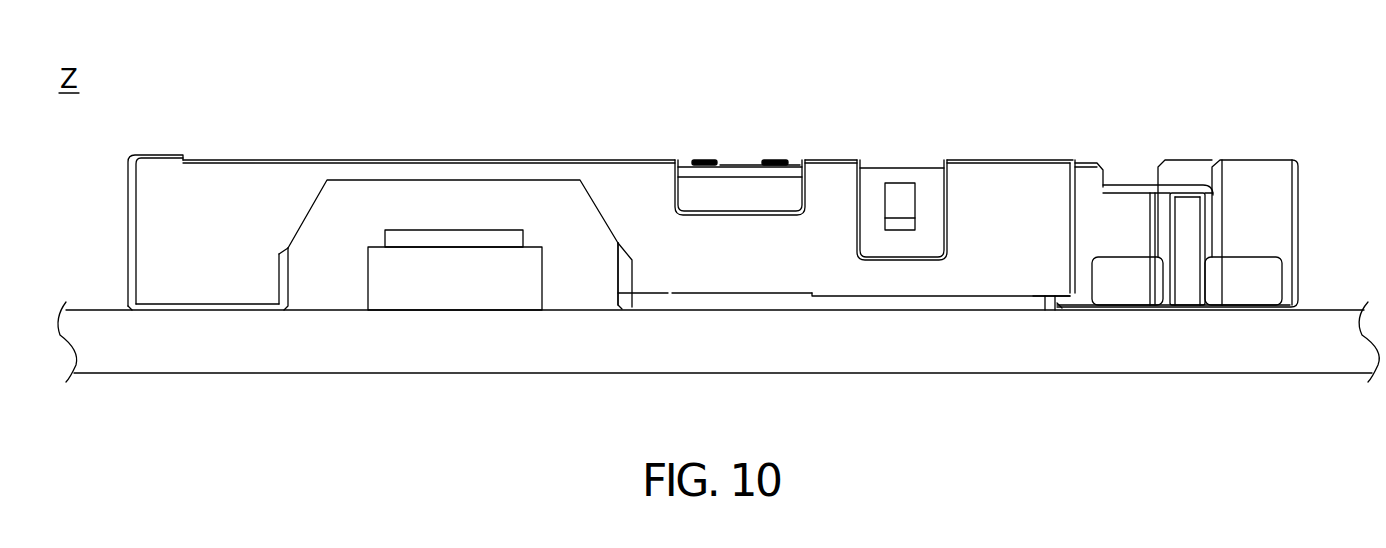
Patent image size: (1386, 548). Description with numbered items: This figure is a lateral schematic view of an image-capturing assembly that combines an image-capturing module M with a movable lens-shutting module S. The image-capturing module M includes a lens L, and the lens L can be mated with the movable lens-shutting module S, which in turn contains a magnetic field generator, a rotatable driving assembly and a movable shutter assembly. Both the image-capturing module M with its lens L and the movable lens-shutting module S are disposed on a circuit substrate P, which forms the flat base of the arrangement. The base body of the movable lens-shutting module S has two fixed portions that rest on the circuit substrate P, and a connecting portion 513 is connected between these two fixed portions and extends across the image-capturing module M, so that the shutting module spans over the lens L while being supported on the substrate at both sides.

The connecting portion 513 is at (455, 173).
The movable lens-shutting module S is at (713, 255).
The circuit substrate P is at (1024, 371).
The lens L is at (421, 229).
The image-capturing module M is at (501, 243).